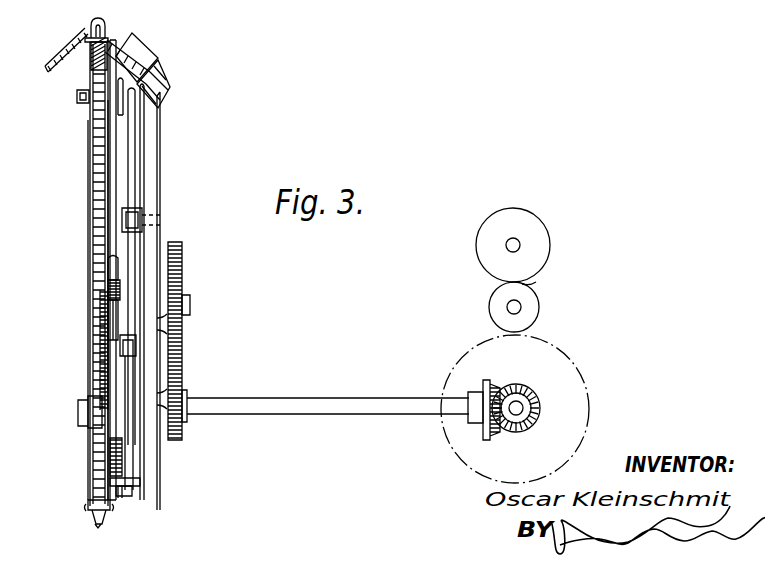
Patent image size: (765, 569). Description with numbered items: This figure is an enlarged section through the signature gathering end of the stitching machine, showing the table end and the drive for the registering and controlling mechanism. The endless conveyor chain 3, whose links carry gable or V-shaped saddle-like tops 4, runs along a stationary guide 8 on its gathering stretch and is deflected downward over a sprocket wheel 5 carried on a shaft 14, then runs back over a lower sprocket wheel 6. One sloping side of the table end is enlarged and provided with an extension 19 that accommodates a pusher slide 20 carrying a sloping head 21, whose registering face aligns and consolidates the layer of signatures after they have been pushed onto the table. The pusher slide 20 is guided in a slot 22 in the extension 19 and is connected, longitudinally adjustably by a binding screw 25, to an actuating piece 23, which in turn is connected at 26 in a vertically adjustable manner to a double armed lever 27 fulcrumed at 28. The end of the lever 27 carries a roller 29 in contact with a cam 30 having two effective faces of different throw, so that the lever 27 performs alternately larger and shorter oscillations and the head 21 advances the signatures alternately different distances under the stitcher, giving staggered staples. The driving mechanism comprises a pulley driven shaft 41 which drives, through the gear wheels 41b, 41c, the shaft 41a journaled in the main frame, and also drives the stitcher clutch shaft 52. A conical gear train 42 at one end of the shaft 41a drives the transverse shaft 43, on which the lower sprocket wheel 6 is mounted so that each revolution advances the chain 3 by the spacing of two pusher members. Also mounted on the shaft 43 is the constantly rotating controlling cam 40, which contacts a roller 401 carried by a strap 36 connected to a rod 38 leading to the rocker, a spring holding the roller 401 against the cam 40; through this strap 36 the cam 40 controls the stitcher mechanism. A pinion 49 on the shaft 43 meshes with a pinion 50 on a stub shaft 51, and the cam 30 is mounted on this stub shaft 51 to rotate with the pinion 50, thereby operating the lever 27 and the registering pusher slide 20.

The endless conveyor chain 3 is at (85, 45).
The saddle-like link tops 4 is at (103, 26).
The sprocket wheel 5 is at (92, 108).
The lower sprocket wheel 6 is at (97, 352).
The stationary guide 8 is at (110, 46).
The shaft 14 is at (80, 100).
The table extension 19 is at (160, 79).
The pusher slide 20 is at (147, 62).
The head 21 is at (140, 43).
The slot 22 is at (145, 78).
The actuating piece 23 is at (157, 92).
The binding screw 25 is at (103, 146).
The connection 26 is at (91, 182).
The double armed lever 27 is at (132, 183).
The fulcrum 28 is at (122, 212).
The roller 29 is at (110, 292).
The cam 30 is at (113, 262).
The strap 36 is at (103, 426).
The rod 38 is at (118, 332).
The cam 40 is at (128, 450).
The roller 401 is at (137, 343).
The pulley driven shaft 41 is at (519, 306).
The shaft 41a is at (519, 406).
The gear wheel 41b is at (531, 287).
The gear wheel 41c is at (588, 398).
The conical gear train 42 is at (508, 430).
The transverse shaft 43 is at (350, 412).
The pinion 49 is at (181, 433).
The pinion 50 is at (179, 253).
The stub shaft 51 is at (190, 300).
The stitcher clutch shaft 52 is at (520, 243).